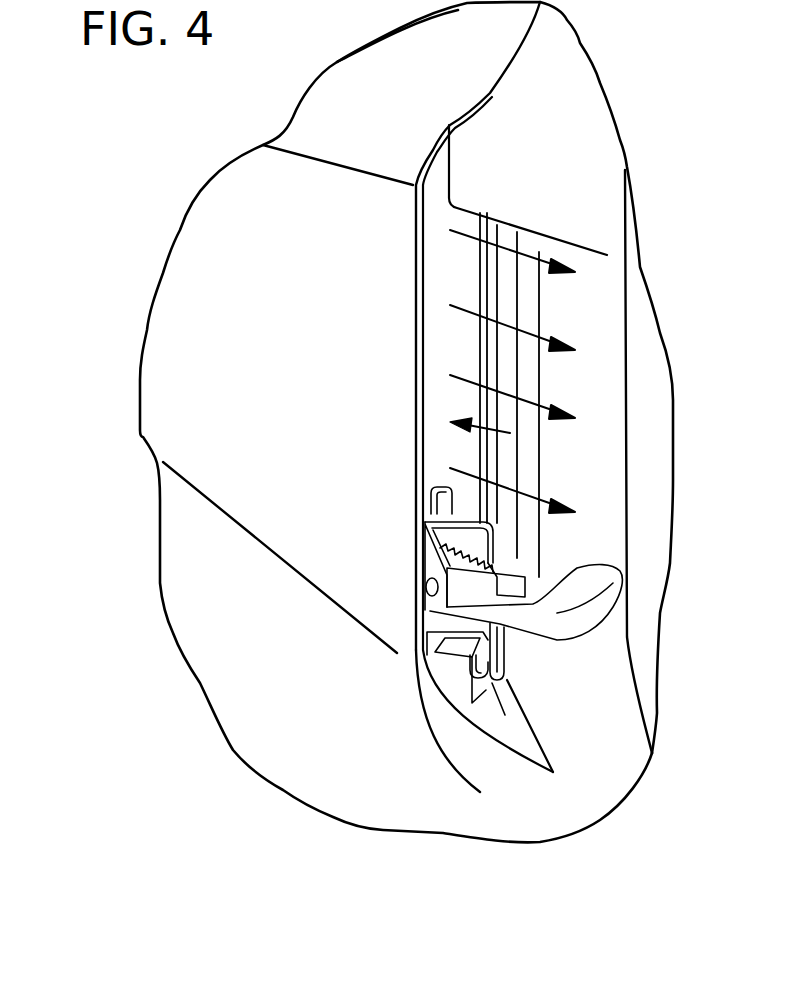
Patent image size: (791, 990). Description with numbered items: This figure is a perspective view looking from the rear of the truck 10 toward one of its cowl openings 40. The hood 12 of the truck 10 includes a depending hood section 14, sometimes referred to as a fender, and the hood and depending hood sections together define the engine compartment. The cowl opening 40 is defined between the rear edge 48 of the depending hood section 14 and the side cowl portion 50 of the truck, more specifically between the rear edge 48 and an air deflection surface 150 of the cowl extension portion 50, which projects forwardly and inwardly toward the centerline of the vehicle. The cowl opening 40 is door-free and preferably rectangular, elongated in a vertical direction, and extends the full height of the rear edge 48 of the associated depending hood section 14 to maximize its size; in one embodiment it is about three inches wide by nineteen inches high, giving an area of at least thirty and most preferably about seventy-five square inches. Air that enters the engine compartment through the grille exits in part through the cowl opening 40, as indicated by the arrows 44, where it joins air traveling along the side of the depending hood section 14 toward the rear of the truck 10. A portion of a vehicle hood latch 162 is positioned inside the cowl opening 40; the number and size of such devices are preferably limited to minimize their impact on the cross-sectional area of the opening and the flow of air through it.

The truck 10 is at (128, 528).
The hood 12 is at (362, 70).
The depending hood section 14 is at (262, 217).
The cowl opening 40 is at (497, 434).
The arrow 44 is at (525, 333).
The rear edge 48 is at (418, 363).
The side cowl portion 50 is at (517, 455).
The air deflection surface 150 is at (457, 270).
The vehicle hood latch 162 is at (518, 645).